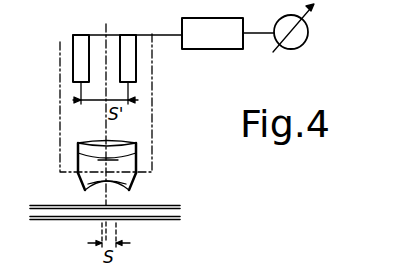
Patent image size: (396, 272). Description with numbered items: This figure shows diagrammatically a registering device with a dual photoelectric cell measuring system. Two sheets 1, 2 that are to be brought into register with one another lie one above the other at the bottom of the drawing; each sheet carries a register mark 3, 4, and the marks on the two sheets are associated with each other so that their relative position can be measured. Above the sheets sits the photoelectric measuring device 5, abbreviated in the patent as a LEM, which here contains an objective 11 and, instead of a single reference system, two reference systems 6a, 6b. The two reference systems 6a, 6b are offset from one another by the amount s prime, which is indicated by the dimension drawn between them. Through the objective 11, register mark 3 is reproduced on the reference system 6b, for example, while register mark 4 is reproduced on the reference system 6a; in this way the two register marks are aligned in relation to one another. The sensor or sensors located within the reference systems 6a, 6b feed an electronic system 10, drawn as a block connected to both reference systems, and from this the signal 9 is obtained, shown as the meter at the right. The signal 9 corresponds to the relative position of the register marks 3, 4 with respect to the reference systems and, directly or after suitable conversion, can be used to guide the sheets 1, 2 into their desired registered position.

The sheet 1 is at (180, 218).
The sheet 2 is at (180, 206).
The register mark 3 is at (89, 235).
The register mark 4 is at (126, 235).
The photoelectric measuring device 5 is at (61, 117).
The reference system 6a is at (78, 51).
The reference system 6b is at (128, 62).
The signal 9 is at (296, 48).
The electronic system 10 is at (224, 46).
The objective 11 is at (137, 157).